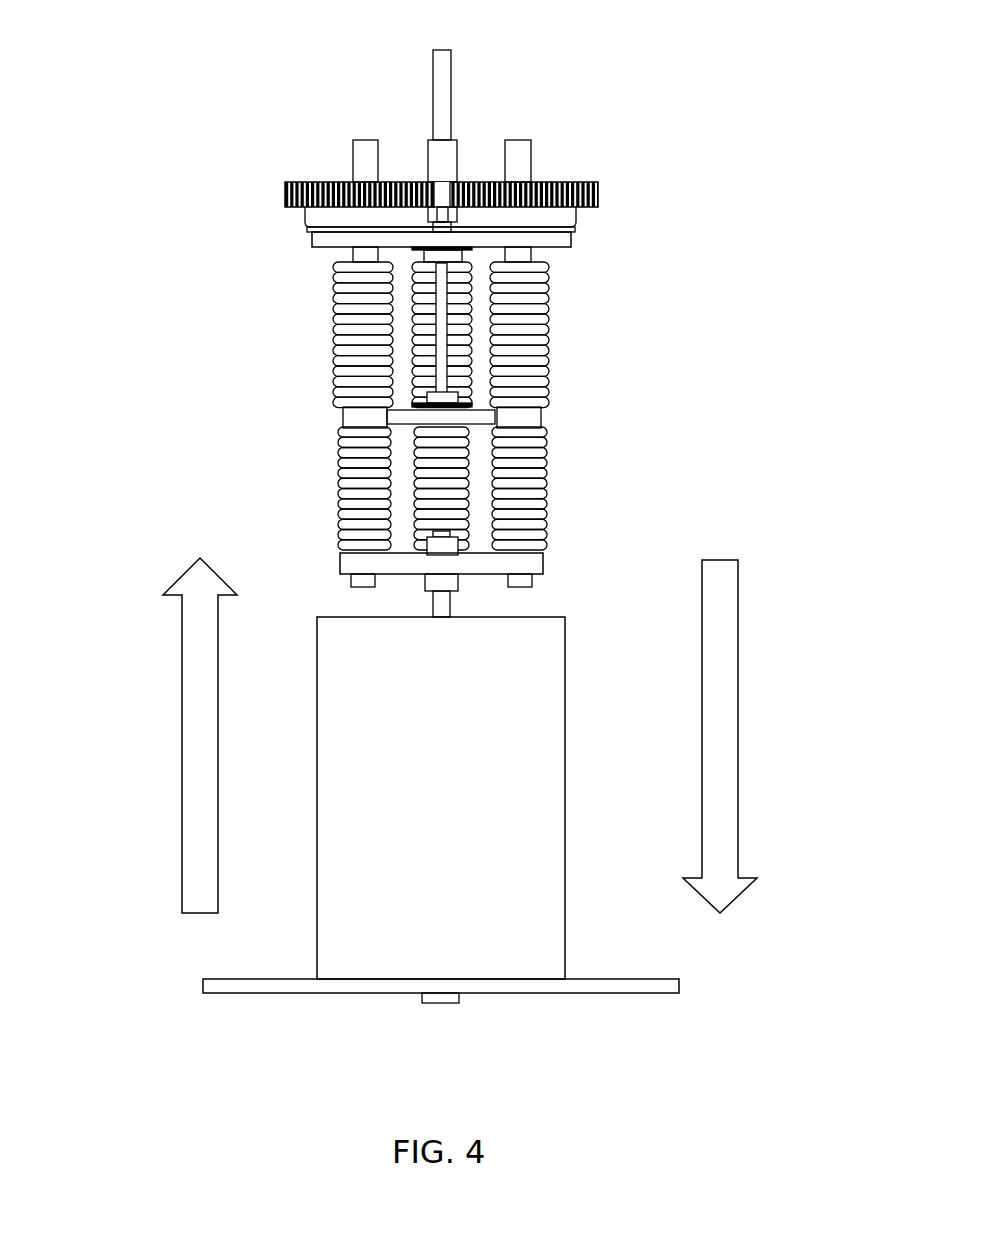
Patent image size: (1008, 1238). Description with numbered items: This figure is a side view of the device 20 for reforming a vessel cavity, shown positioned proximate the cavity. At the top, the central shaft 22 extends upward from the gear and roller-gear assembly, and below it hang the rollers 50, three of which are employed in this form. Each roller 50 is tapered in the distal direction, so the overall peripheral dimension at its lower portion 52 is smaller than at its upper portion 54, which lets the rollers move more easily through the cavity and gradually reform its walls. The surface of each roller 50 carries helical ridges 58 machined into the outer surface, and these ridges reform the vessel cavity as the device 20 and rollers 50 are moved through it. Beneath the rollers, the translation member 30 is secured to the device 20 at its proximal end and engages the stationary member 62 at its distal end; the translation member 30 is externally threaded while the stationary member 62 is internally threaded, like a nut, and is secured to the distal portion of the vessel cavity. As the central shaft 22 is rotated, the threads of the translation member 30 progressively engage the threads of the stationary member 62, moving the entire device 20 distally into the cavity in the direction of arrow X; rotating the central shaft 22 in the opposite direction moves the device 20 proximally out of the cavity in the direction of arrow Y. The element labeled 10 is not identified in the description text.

The cylinder 10 is at (585, 637).
The device 20 is at (541, 88).
The central shaft 22 is at (437, 60).
The translation member 30 is at (440, 600).
The rollers 50 is at (535, 270).
The lower portion 52 is at (565, 528).
The upper portion 54 is at (310, 277).
The helical ridges 58 is at (548, 332).
The stationary member 62 is at (458, 998).
The arrow X is at (728, 651).
The arrow Y is at (193, 695).